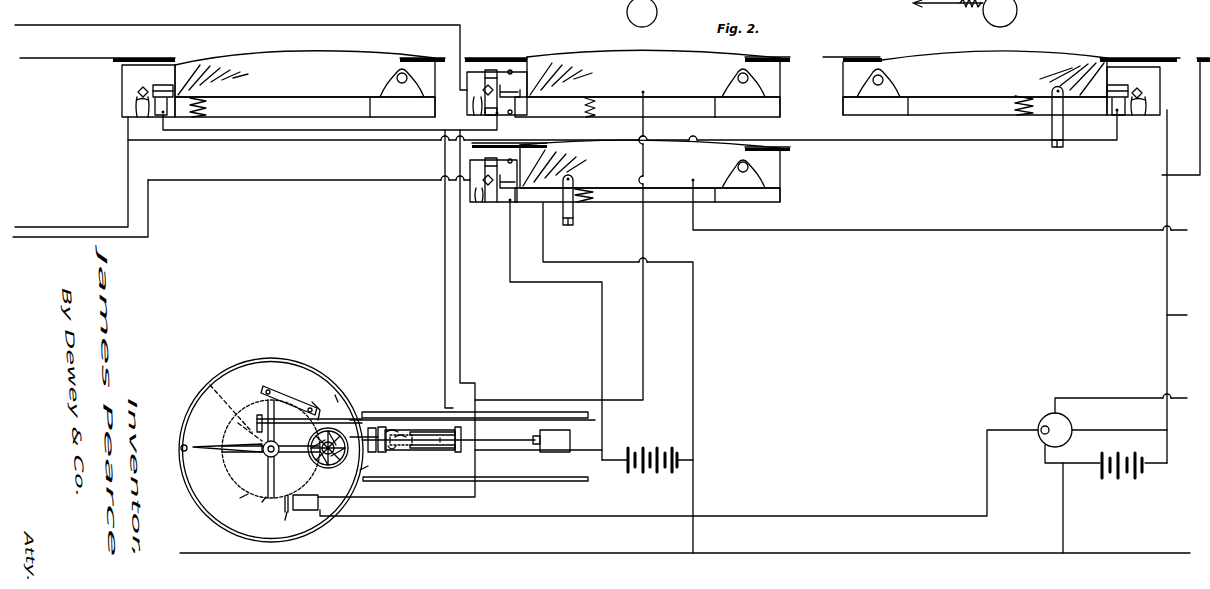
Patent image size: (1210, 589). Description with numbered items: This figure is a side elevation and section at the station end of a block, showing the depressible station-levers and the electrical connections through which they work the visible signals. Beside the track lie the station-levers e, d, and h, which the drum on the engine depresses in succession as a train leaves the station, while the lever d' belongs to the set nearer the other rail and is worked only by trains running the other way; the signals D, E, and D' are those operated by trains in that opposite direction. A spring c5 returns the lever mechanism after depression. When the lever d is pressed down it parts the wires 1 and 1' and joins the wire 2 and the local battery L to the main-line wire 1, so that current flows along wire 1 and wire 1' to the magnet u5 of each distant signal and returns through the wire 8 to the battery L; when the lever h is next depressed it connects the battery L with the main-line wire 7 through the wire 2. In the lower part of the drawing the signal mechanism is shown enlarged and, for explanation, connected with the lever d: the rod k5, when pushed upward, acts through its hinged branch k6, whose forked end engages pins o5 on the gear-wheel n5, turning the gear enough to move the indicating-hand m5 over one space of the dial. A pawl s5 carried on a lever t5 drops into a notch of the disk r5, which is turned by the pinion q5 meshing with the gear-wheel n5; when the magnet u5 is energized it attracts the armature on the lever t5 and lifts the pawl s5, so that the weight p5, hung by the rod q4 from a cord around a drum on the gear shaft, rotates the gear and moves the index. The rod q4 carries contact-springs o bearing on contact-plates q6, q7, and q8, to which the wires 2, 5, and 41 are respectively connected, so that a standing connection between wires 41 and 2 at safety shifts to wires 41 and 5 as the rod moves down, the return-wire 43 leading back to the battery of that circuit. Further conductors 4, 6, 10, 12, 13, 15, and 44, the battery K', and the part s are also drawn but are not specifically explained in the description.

The main-line wire 1 is at (241, 50).
The wire 1' is at (678, 299).
The wire 2 is at (225, 130).
The wire 4 is at (510, 252).
The wire 5 is at (643, 107).
The wire 6 is at (426, 180).
The main-line wire 7 is at (128, 160).
The wire 8 is at (352, 555).
The wire 10 is at (888, 230).
The wire 12 is at (1180, 260).
The wire 13 is at (1174, 315).
The wire 15 is at (1100, 398).
The wire 41 is at (611, 468).
The return-wire 43 is at (543, 232).
The wire 44 is at (538, 459).
The depression-lever h is at (295, 64).
The depression-lever d is at (595, 83).
The depression-lever d' is at (630, 182).
The depression-lever e is at (723, 295).
The spring c5 is at (210, 107).
The signal E is at (372, 420).
The signal D is at (973, 13).
The signal D' is at (1094, 426).
The local battery L is at (660, 451).
The battery K' is at (1106, 473).
The indicating-hand m5 is at (271, 450).
The gear-wheel n5 is at (228, 466).
The pawl s5 is at (299, 404).
The stud s is at (334, 391).
The branch rod k6 is at (315, 408).
The rod k5 is at (530, 414).
The pinion q5 is at (329, 461).
The rod q4 is at (364, 448).
The contact-plate q6 is at (396, 430).
The contact-plate q7 is at (438, 448).
The contact-plate q8 is at (414, 448).
The contact-spring o is at (393, 457).
The pin o5 is at (249, 499).
The disk r5 is at (368, 481).
The lever t5 is at (283, 520).
The magnet u5 is at (301, 512).
The weight p5 is at (556, 448).